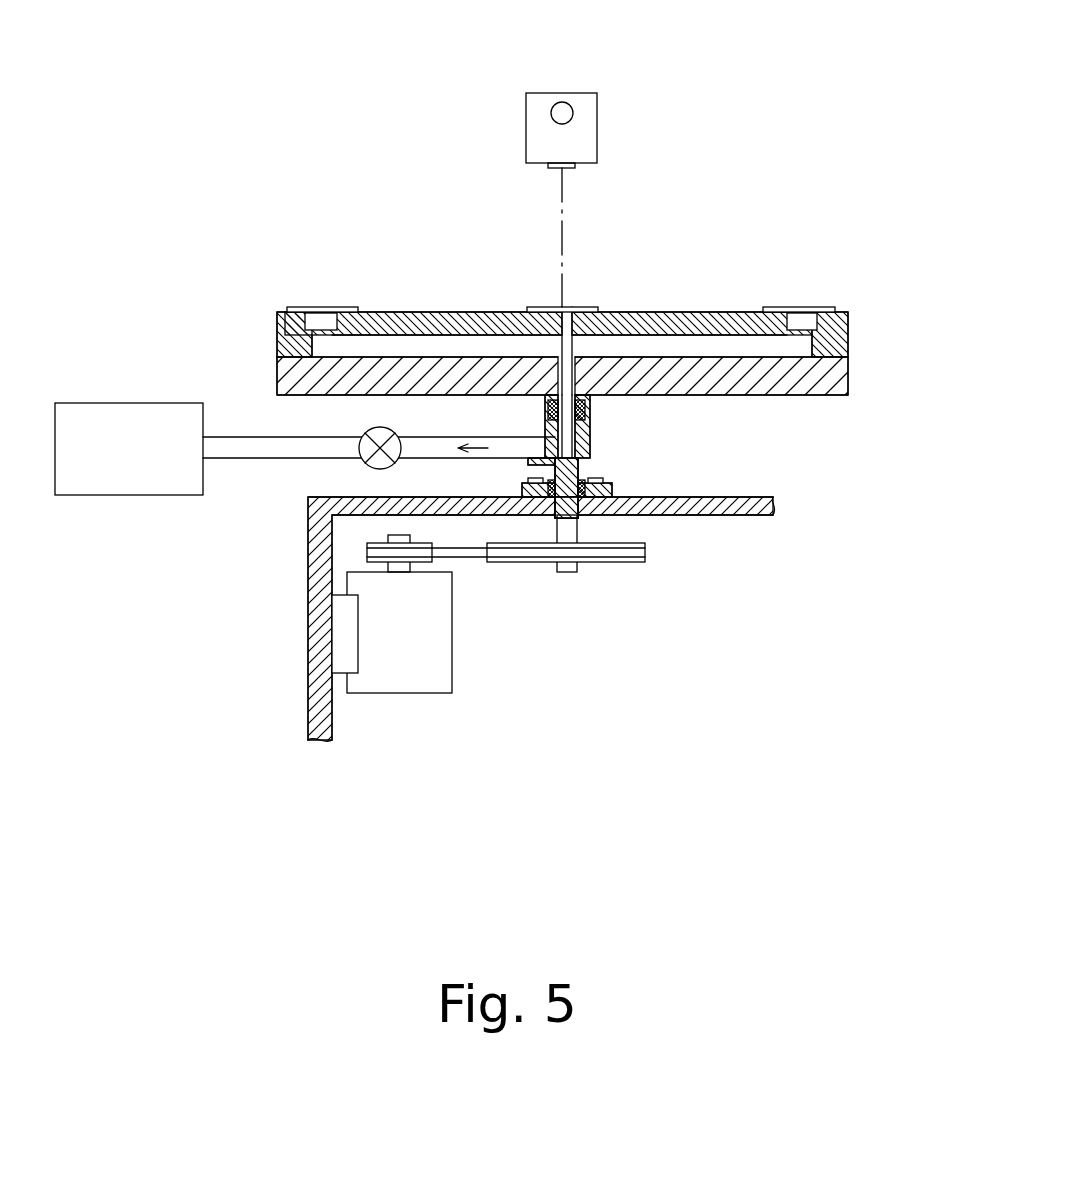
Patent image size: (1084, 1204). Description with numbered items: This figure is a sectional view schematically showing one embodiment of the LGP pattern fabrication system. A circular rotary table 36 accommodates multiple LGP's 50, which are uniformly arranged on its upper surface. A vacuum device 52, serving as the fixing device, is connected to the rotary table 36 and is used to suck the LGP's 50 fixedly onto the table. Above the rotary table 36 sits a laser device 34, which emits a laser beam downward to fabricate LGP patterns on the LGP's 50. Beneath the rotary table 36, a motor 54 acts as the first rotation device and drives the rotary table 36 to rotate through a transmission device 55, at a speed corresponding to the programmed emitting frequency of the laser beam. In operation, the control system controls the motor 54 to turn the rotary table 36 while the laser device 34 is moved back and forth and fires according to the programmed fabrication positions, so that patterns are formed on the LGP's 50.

The laser device 34 is at (600, 127).
The rotary table 36 is at (810, 395).
The LGP's 50 is at (325, 307).
The vacuum device 52 is at (128, 450).
The motor 54 is at (433, 643).
The transmission device 55 is at (663, 585).